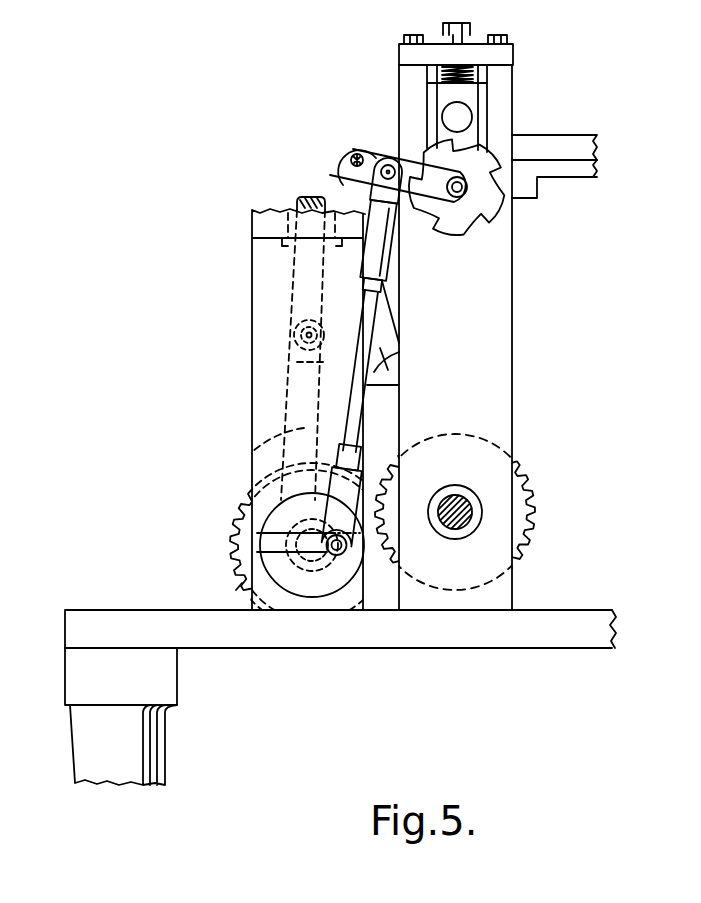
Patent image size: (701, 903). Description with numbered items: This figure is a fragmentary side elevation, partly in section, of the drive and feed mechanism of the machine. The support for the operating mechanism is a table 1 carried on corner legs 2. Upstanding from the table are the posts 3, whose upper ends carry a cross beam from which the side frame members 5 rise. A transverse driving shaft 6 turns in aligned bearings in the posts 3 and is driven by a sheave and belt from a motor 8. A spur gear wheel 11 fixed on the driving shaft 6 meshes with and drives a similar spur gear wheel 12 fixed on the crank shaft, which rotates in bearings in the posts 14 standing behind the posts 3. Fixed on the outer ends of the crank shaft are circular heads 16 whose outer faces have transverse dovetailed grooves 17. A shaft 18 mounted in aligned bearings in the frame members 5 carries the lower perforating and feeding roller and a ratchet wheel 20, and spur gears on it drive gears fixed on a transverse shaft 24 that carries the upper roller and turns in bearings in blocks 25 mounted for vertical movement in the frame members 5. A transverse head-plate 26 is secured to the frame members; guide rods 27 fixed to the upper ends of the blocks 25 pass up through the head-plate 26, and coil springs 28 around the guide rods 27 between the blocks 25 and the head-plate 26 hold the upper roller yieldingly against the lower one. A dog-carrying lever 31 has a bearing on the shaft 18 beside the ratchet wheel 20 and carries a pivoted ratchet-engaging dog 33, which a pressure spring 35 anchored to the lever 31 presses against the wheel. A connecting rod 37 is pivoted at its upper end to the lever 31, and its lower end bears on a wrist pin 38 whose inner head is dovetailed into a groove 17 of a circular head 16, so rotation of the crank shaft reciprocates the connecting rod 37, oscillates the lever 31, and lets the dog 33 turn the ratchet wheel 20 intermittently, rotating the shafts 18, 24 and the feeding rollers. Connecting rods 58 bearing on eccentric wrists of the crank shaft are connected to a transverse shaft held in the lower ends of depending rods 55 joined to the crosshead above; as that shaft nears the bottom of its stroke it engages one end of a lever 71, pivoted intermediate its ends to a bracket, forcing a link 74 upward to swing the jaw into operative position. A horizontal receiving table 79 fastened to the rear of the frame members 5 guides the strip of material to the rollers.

The table 1 is at (614, 630).
The corner legs 2 is at (166, 738).
The posts 3 is at (512, 318).
The side frame members 5 is at (500, 99).
The transverse driving shaft 6 is at (457, 494).
The motor 8 is at (597, 150).
The spur gear wheel 11 is at (518, 500).
The spur gear wheel 12 is at (238, 540).
The posts 14 is at (252, 405).
The circular heads 16 is at (333, 588).
The dovetailed grooves 17 is at (240, 574).
The shaft 18 is at (463, 200).
The ratchet wheel 20 is at (473, 158).
The transverse shaft 24 is at (445, 115).
The blocks 25 is at (435, 93).
The head-plate 26 is at (507, 52).
The guide rods 27 is at (463, 38).
The coil springs 28 is at (440, 72).
The dog-carrying lever 31 is at (390, 148).
The ratchet engaging dog 33 is at (406, 214).
The pressure spring 35 is at (347, 189).
The connecting rod 37 is at (370, 303).
The wrist pin 38 is at (352, 555).
The rods 55 is at (297, 203).
The connecting rods 58 is at (252, 452).
The lever 71 is at (380, 386).
The link 74 is at (385, 318).
The horizontal receiving table 79 is at (590, 171).